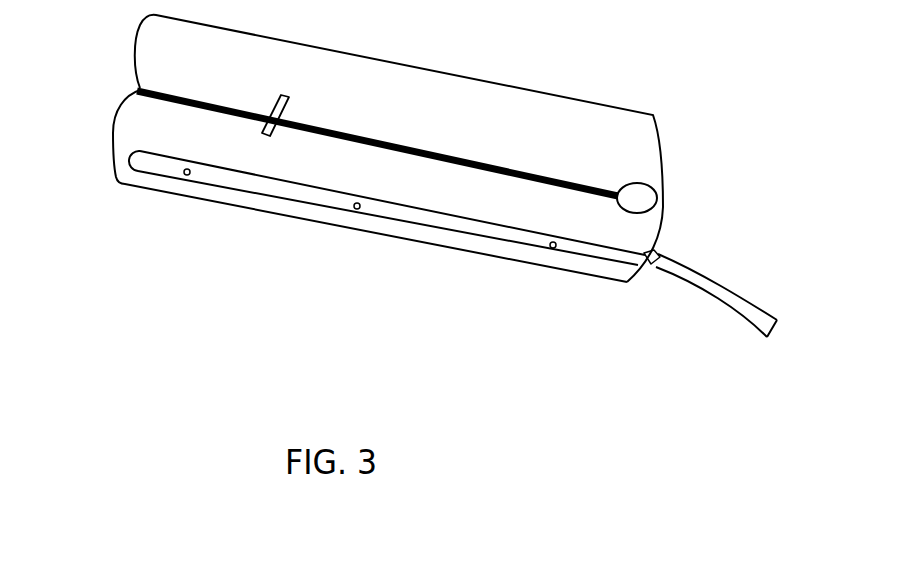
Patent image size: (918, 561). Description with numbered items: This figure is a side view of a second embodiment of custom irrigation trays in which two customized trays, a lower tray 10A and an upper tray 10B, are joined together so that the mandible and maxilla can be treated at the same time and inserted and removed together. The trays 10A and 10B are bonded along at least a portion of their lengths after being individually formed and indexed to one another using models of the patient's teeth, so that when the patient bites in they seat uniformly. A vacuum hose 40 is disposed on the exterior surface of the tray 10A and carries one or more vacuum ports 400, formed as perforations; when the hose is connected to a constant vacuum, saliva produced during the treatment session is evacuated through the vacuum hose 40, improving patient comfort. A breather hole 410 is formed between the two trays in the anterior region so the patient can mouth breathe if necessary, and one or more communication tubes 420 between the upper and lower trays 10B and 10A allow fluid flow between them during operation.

The tray 10A is at (140, 122).
The upper tray 10B is at (540, 115).
The vacuum hose 40 is at (302, 197).
The vacuum ports 400 is at (183, 180).
The breather hole 410 is at (653, 202).
The communication tubes 420 is at (283, 100).